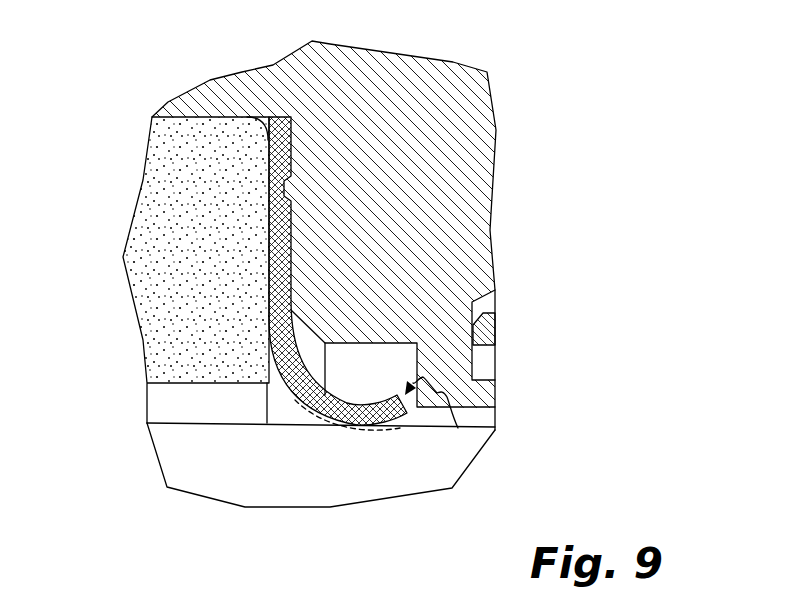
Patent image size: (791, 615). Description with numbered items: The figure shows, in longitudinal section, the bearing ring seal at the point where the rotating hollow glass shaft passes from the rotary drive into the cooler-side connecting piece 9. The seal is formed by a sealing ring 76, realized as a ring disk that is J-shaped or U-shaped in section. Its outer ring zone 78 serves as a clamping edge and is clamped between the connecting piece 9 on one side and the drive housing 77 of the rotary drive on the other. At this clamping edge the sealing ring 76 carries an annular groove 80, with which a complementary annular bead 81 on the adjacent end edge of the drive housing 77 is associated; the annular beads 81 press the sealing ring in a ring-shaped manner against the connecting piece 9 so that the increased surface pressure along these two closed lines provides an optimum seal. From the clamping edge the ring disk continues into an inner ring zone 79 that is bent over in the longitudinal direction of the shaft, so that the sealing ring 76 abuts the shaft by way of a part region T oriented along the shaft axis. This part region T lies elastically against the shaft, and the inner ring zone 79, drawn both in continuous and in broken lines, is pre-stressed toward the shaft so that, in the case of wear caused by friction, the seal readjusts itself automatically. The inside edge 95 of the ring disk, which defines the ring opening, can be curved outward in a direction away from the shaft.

The connecting piece 9 is at (152, 195).
The sealing ring 76 is at (305, 148).
The drive housing 77 is at (480, 127).
The outer ring zone 78 is at (279, 167).
The ring zone 79 is at (262, 391).
The annular groove 80 is at (294, 200).
The annular bead 81 is at (300, 190).
The inside edge 95 is at (495, 430).
The part region T is at (360, 440).